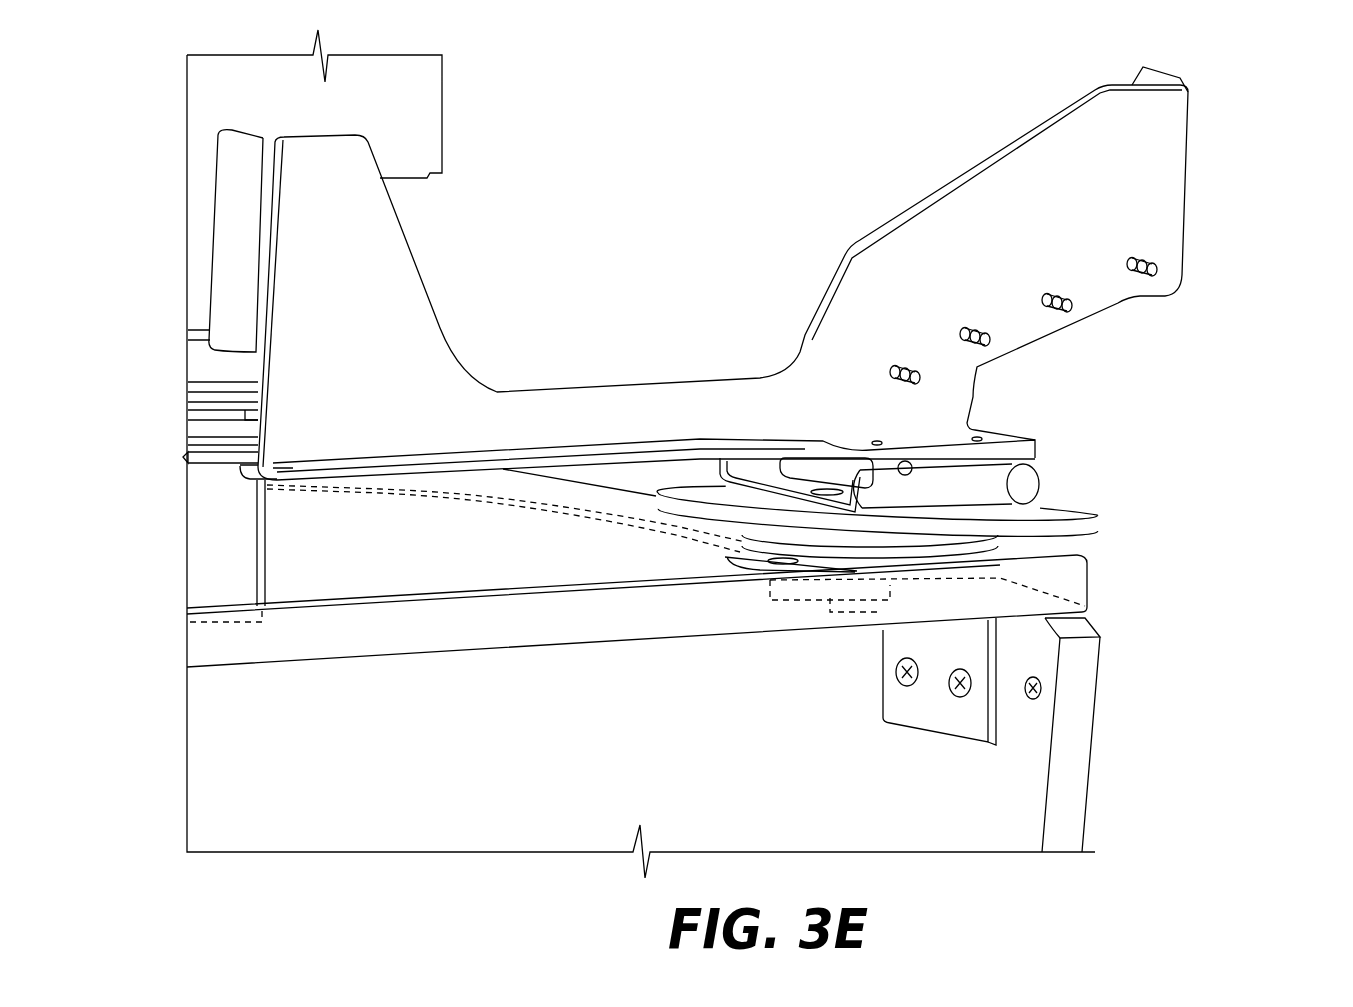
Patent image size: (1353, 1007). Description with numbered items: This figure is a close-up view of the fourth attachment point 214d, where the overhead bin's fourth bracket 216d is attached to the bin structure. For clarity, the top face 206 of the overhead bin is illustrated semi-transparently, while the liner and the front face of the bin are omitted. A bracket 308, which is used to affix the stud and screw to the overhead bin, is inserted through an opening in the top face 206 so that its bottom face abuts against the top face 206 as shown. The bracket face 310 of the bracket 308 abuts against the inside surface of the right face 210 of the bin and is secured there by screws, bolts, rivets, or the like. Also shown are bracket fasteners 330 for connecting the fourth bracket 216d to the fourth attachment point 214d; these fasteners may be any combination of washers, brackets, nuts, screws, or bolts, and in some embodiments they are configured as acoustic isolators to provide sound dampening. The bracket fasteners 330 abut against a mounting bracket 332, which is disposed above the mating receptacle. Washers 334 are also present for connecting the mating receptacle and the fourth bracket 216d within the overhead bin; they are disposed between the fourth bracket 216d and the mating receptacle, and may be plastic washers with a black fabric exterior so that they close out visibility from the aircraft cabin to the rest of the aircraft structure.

The top face 206 is at (447, 623).
The right face 210 is at (1080, 700).
The fourth attachment point 214d is at (1102, 593).
The fourth bracket 216d is at (833, 352).
The bracket 308 is at (862, 668).
The bracket face 310 is at (978, 718).
The bracket fasteners 330 is at (807, 470).
The mounting bracket 332 is at (1010, 483).
The washers 334 is at (1013, 508).